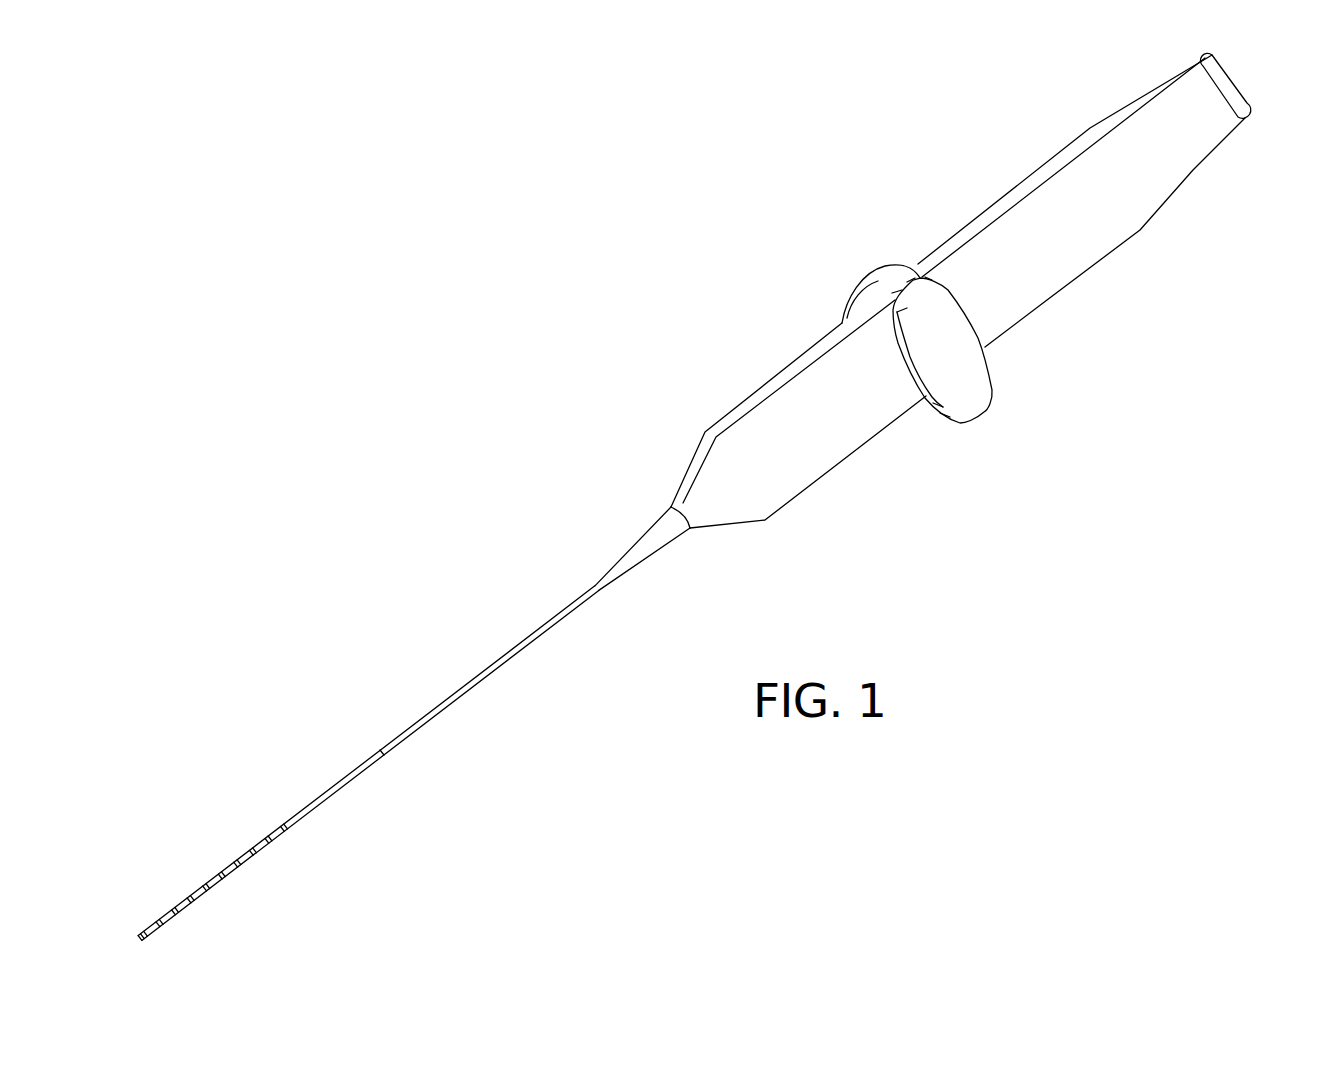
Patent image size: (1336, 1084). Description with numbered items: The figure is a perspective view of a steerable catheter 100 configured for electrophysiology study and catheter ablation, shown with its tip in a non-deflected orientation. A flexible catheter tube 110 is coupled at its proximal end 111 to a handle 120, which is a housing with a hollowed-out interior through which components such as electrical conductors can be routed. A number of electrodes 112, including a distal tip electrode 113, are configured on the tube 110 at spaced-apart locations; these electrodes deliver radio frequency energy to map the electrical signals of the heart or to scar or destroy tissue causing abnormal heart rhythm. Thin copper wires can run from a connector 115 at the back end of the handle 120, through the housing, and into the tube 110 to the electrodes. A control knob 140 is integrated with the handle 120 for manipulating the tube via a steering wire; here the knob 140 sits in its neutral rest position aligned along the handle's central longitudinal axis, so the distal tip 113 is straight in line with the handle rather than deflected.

The steerable catheter 100 is at (610, 330).
The catheter tube 110 is at (445, 697).
The proximal end 111 is at (603, 549).
The electrodes 112 is at (288, 830).
The distal tip electrode 113 is at (141, 937).
The connector 115 is at (1233, 98).
The handle 120 is at (1067, 288).
The control knob 140 is at (922, 280).